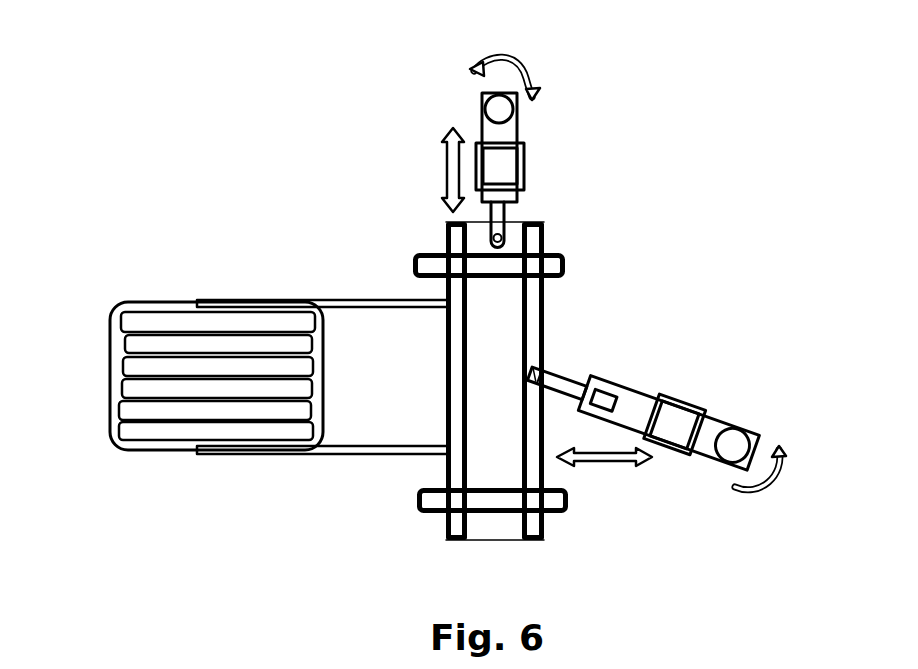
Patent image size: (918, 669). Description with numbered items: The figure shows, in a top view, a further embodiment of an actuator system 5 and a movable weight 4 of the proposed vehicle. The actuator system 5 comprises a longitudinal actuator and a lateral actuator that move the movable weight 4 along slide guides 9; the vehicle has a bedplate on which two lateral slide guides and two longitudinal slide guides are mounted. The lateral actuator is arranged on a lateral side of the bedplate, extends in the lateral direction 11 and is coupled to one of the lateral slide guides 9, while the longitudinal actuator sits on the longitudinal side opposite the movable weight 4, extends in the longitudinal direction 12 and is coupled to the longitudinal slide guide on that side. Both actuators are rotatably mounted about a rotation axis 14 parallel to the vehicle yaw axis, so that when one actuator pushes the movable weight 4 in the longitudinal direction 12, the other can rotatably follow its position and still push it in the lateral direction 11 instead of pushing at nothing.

The movable weight 4 is at (108, 379).
The actuator system 5 is at (525, 158).
The slide guides 9 is at (546, 306).
The lateral direction 11 is at (445, 167).
The longitudinal direction 12 is at (612, 463).
The rotation axis 14 is at (520, 72).